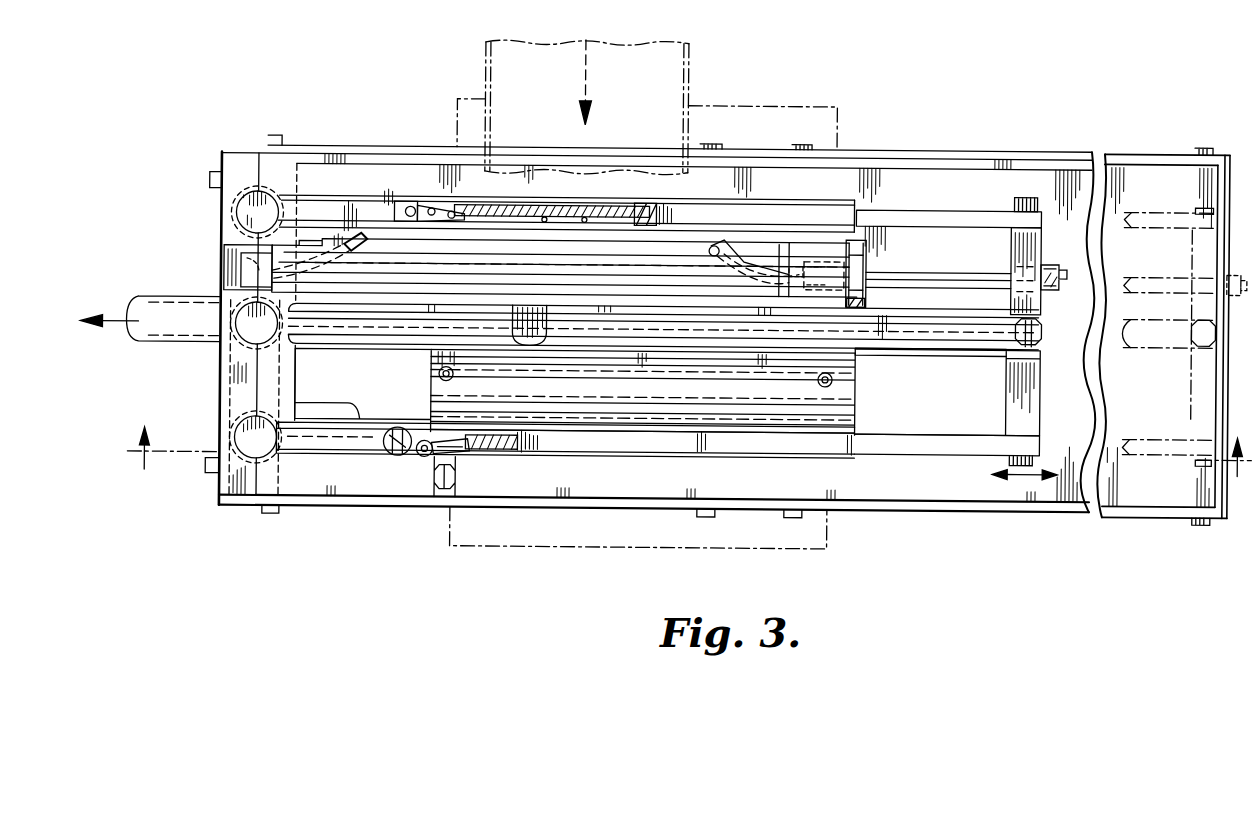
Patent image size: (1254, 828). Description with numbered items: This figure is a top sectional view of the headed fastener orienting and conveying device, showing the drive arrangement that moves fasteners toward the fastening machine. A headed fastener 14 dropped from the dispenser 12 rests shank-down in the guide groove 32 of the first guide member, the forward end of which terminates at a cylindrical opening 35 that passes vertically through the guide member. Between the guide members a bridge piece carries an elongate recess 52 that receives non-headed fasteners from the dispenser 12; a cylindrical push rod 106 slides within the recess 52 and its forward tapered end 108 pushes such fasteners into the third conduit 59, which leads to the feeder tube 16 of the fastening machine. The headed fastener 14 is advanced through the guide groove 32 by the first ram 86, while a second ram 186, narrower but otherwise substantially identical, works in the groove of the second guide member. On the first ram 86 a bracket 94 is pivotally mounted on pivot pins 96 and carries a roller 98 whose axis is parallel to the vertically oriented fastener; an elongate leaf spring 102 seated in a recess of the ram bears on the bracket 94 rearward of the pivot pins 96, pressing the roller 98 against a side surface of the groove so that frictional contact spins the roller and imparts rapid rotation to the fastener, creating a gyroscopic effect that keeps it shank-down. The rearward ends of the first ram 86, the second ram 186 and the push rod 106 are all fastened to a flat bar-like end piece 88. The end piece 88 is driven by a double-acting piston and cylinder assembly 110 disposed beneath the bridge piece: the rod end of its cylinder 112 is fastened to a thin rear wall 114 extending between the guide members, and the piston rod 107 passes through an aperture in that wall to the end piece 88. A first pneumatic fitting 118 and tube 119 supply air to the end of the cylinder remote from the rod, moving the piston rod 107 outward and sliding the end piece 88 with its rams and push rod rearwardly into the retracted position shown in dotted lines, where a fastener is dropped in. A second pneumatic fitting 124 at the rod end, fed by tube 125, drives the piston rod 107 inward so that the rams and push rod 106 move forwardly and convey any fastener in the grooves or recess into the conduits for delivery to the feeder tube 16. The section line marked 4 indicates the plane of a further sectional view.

The fastener dispenser 12 is at (688, 68).
The headed fastener 14 is at (398, 454).
The feeder tube 16 is at (168, 345).
The guide groove 32 is at (340, 449).
The cylindrical opening 35 is at (243, 460).
The elongate recess 52 is at (491, 343).
The third conduit 59 is at (327, 322).
The first ram 86 is at (937, 441).
The end piece 88 is at (1013, 402).
The bracket 94 is at (460, 482).
The pivot pins 96 is at (470, 452).
The roller 98 is at (427, 455).
The leaf spring 102 is at (500, 449).
The push rod 106 is at (925, 337).
The piston rod 107 is at (940, 271).
The forward tapered end 108 is at (545, 342).
The double-acting piston and cylinder assembly 110 is at (648, 241).
The cylinder 112 is at (797, 253).
The rear wall 114 is at (858, 297).
The first pneumatic fitting 118 is at (226, 258).
The tube 119 is at (347, 243).
The second pneumatic fitting 124 is at (866, 246).
The tube 125 is at (738, 238).
The second ram 186 is at (907, 209).
The section line 4- 4 is at (681, 462).